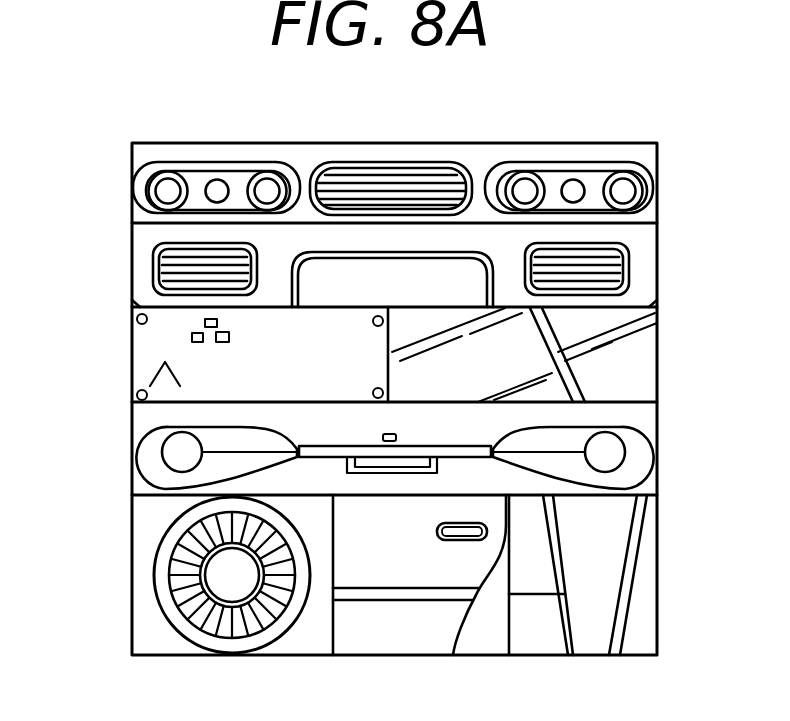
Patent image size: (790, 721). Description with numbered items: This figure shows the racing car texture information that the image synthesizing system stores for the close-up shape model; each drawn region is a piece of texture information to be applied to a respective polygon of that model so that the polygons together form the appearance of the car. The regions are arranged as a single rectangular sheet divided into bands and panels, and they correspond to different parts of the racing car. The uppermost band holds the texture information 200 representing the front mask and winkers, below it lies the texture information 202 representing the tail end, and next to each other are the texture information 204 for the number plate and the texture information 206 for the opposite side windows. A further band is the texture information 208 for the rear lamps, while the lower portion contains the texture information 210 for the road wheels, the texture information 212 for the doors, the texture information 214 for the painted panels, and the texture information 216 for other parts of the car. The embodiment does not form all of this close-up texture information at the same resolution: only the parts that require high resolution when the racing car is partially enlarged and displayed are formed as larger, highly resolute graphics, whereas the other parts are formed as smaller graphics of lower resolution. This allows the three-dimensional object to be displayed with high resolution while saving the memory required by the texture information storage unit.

The texture information for front mask and winkers 200 is at (663, 143).
The texture information for tail end 202 is at (663, 228).
The texture information for number plate 204 is at (150, 343).
The texture information for opposite side windows 206 is at (627, 360).
The texture information for rear lamps 208 is at (663, 405).
The texture information for road wheels 210 is at (147, 556).
The texture information for doors 212 is at (384, 638).
The texture information for painted panels 214 is at (653, 590).
The texture information for other car parts 216 is at (543, 640).